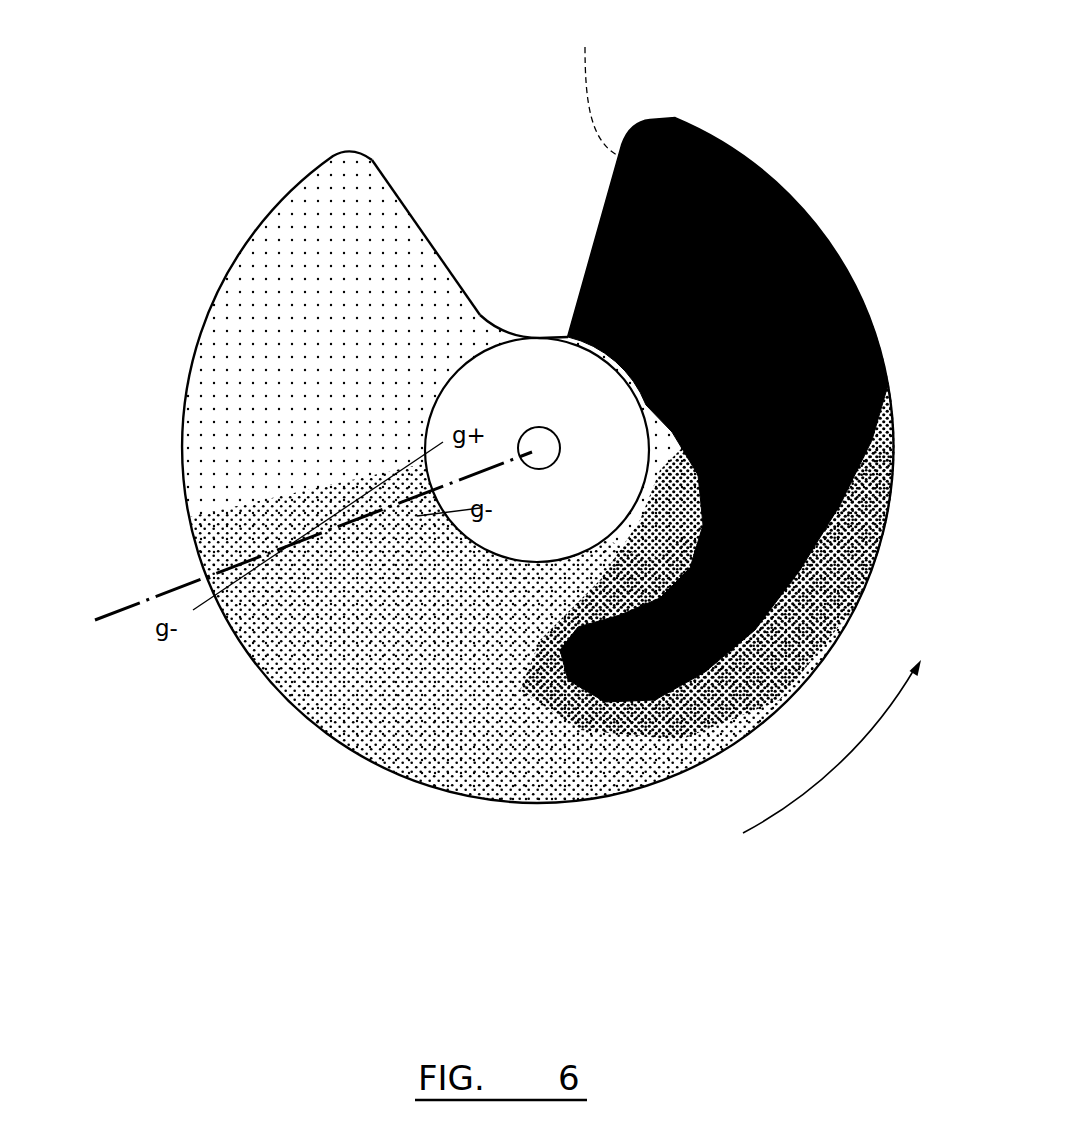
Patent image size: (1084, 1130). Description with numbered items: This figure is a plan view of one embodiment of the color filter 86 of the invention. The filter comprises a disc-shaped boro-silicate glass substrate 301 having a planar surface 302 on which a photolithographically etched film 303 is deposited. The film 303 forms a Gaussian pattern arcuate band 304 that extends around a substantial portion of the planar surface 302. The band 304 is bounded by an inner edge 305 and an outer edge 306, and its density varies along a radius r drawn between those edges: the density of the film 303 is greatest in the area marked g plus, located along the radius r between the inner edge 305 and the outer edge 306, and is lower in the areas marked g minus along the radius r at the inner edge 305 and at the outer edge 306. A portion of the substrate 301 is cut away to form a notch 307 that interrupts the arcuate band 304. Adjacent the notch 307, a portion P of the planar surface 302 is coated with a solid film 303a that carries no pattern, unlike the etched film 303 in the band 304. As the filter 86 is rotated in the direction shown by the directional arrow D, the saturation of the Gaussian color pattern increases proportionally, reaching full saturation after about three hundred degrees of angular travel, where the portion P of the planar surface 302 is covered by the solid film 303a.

The glass substrate 301 is at (290, 188).
The planar surface 302 is at (367, 200).
The etched film 303 is at (400, 228).
The solid film 303a is at (763, 172).
The arcuate band 304 is at (303, 383).
The inner edge 305 is at (570, 558).
The outer edge 306 is at (600, 800).
The notch 307 is at (443, 267).
The color filter 86 is at (726, 113).
The portion of planar surface P is at (597, 86).
The radius r is at (165, 592).
The directional arrow D is at (832, 746).